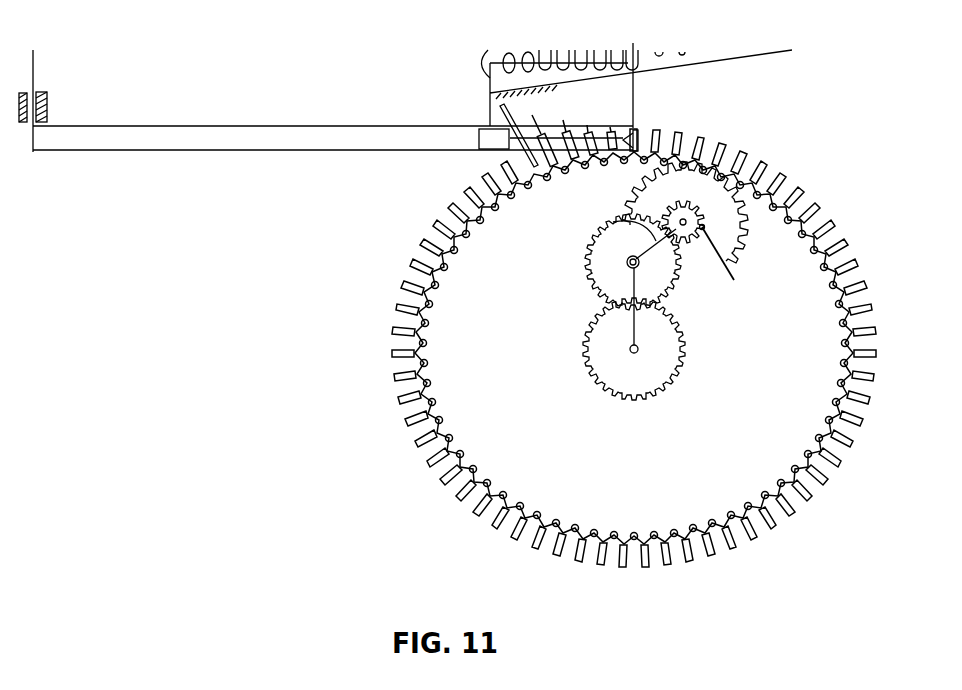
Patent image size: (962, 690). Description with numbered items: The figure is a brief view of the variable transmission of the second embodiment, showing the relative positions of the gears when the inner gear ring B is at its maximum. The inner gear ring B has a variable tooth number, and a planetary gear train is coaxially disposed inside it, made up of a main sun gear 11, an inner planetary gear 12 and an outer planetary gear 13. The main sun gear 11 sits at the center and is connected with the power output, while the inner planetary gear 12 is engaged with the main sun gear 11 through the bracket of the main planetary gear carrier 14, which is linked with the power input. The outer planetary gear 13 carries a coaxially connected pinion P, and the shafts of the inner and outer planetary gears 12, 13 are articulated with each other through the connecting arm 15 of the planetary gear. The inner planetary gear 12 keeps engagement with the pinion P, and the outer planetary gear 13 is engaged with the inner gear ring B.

The main sun gear 11 is at (607, 358).
The inner planetary gear 12 is at (588, 249).
The outer planetary gear 13 is at (732, 221).
The main planetary gear carrier 14 is at (630, 293).
The connecting arm of the planetary gear 15 is at (620, 222).
The pinion P is at (721, 264).
The inner gear ring B is at (797, 442).